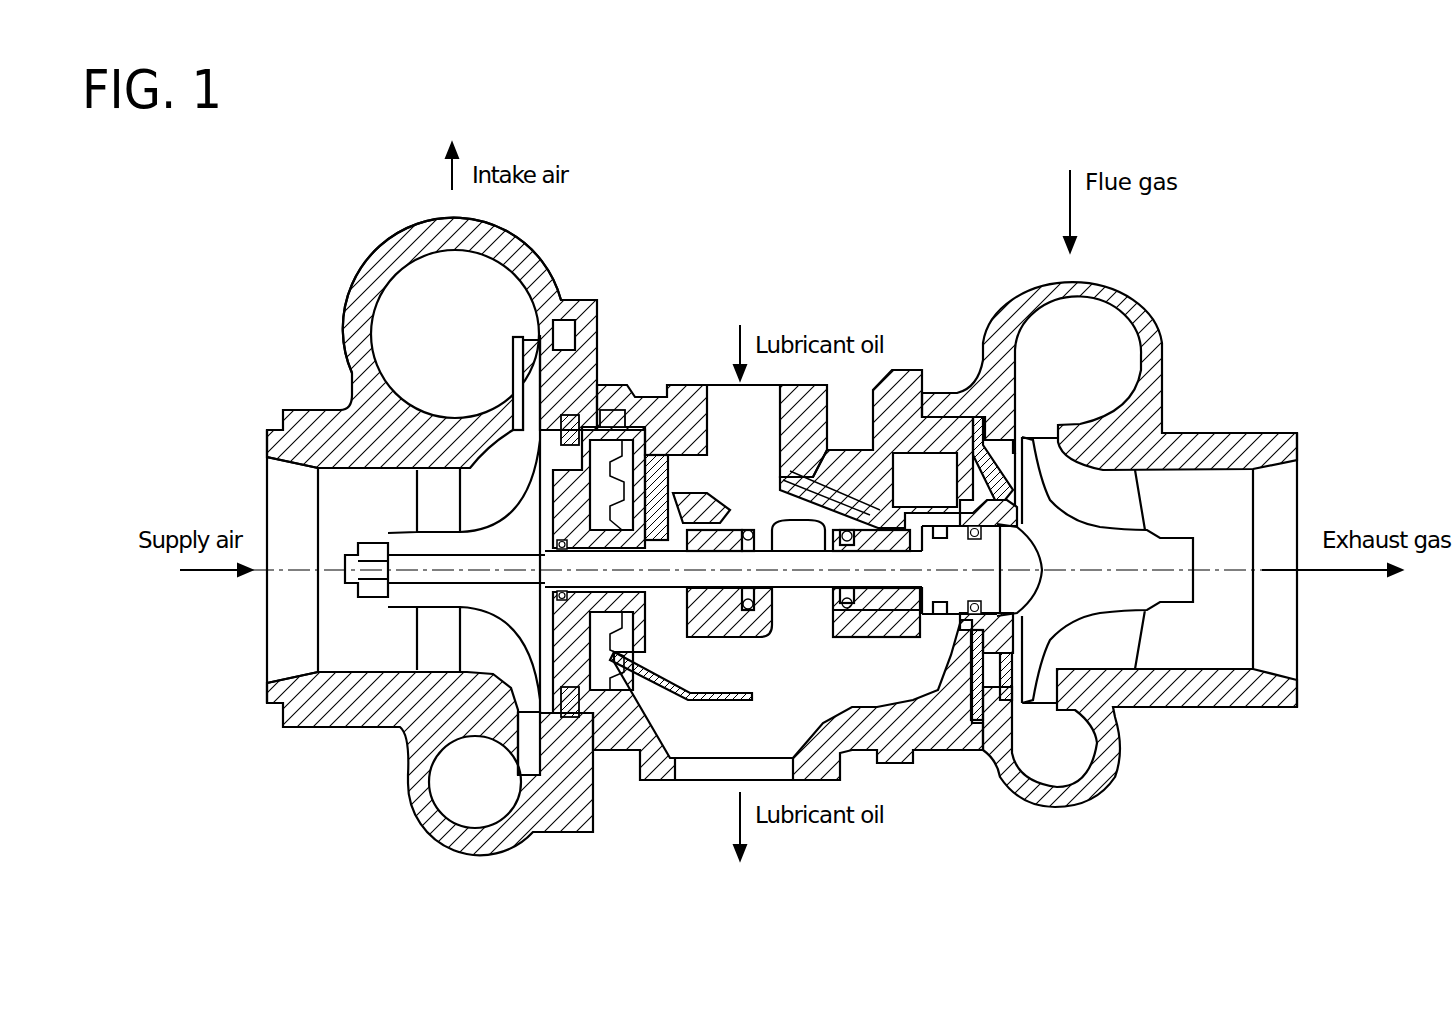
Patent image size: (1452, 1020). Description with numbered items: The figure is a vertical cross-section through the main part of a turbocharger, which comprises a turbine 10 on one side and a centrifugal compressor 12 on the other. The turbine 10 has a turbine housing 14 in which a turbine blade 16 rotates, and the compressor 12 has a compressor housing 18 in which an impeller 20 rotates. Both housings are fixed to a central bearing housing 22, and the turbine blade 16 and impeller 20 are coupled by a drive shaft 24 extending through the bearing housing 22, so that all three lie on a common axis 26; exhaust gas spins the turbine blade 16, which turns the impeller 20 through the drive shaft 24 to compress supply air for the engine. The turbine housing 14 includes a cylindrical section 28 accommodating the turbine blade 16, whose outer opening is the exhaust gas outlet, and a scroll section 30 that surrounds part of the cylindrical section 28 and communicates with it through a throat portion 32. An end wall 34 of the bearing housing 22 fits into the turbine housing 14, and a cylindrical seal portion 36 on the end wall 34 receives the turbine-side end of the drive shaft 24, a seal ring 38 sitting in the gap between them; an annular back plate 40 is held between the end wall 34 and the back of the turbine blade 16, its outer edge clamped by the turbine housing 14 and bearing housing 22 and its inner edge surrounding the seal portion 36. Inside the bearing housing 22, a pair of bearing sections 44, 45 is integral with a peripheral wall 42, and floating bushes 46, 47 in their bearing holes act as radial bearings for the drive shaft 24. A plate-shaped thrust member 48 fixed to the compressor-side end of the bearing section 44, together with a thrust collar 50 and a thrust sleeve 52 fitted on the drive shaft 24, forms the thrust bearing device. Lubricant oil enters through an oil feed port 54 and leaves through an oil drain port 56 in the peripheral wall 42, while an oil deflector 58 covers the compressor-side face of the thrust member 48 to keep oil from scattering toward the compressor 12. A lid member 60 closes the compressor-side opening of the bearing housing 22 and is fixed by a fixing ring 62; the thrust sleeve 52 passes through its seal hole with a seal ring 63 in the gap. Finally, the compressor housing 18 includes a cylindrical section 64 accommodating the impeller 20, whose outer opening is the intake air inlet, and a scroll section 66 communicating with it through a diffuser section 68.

The turbine 10 is at (1270, 256).
The compressor 12 is at (453, 506).
The turbine housing 14 is at (1140, 527).
The turbine blade 16 is at (1178, 533).
The compressor housing 18 is at (367, 252).
The impeller 20 is at (415, 490).
The bearing housing 22 is at (685, 586).
The drive shaft 24 is at (787, 590).
The axis 26 is at (1265, 570).
The cylindrical section 28 is at (1223, 430).
The scroll section 30 is at (1110, 278).
The throat portion 32 is at (1042, 437).
The end wall 34 is at (960, 628).
The seal portion 36 is at (1000, 620).
The seal ring 38 is at (997, 532).
The back plate 40 is at (1007, 472).
The peripheral wall 42 is at (683, 383).
The bearing section 44 is at (736, 692).
The bearing section 45 is at (858, 640).
The floating bush 46 is at (720, 530).
The floating bush 47 is at (887, 542).
The thrust member 48 is at (647, 430).
The thrust collar 50 is at (680, 648).
The thrust sleeve 52 is at (600, 630).
The oil feed port 54 is at (715, 400).
The oil drain port 56 is at (690, 785).
The oil deflector 58 is at (737, 694).
The lid member 60 is at (557, 510).
The fixing ring 62 is at (558, 693).
The seal ring 63 is at (555, 548).
The cylindrical section 64 is at (317, 410).
The scroll section 66 is at (408, 232).
The diffuser section 68 is at (527, 387).